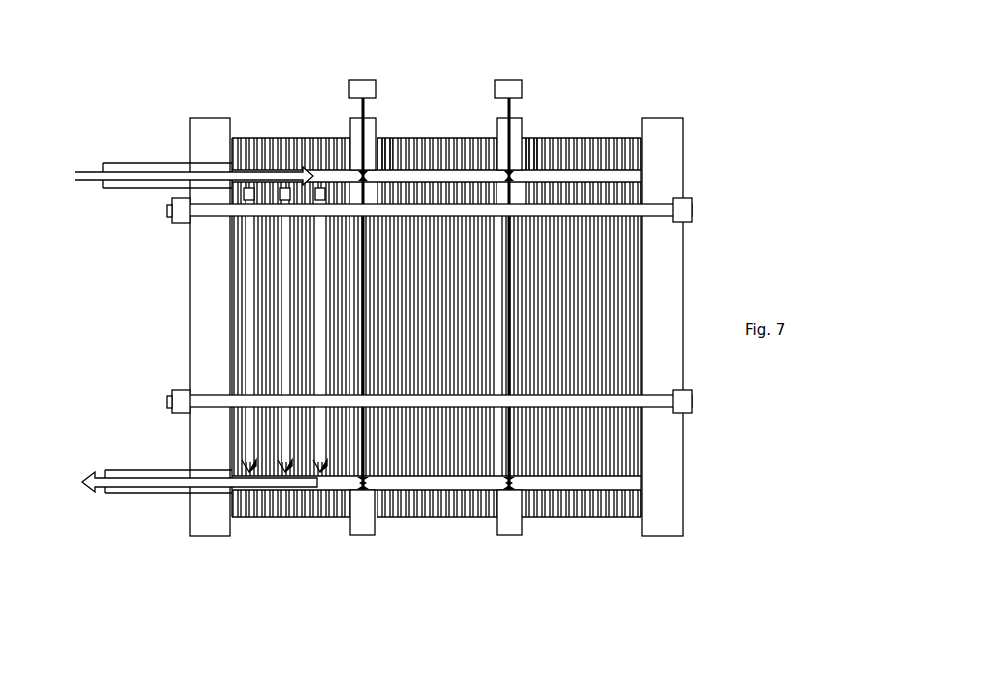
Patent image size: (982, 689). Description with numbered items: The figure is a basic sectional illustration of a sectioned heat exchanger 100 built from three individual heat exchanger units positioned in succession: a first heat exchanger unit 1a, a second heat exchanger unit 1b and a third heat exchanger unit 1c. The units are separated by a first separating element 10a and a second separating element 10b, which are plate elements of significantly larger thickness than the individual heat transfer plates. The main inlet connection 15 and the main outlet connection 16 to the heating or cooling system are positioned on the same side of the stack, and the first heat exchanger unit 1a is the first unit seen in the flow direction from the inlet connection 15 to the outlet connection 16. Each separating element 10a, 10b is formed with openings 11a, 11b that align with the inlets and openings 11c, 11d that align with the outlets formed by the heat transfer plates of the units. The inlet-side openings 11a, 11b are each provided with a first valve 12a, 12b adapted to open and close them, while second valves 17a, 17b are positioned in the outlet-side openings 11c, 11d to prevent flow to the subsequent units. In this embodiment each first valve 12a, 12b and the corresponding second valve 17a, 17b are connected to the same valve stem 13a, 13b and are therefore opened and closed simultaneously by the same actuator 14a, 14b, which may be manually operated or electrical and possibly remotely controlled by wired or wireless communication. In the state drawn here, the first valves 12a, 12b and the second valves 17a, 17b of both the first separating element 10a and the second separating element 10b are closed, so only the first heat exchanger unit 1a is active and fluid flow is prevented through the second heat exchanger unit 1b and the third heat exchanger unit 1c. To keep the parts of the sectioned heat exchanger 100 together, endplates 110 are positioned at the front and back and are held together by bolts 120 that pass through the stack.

The sectioned heat exchanger 100 is at (657, 41).
The endplates 110 is at (215, 287).
The bolts 120 is at (662, 407).
The inlet connection 15 is at (180, 163).
The main outlet connection 16 is at (167, 490).
The first heat exchanger unit 1a is at (245, 518).
The second heat exchanger unit 1b is at (400, 518).
The third heat exchanger unit 1c is at (615, 517).
The first separating element 10a is at (363, 537).
The second separating element 10b is at (508, 537).
The opening 11a is at (328, 138).
The opening 11b is at (500, 175).
The opening 11c is at (330, 518).
The opening 11d is at (473, 517).
The first valve 12a is at (390, 136).
The first valve 12b is at (527, 143).
The valve stem 13a is at (368, 118).
The valve stem 13b is at (512, 117).
The actuator 14a is at (365, 78).
The actuator 14b is at (513, 88).
The second valve 17a is at (353, 478).
The second valve 17b is at (512, 485).